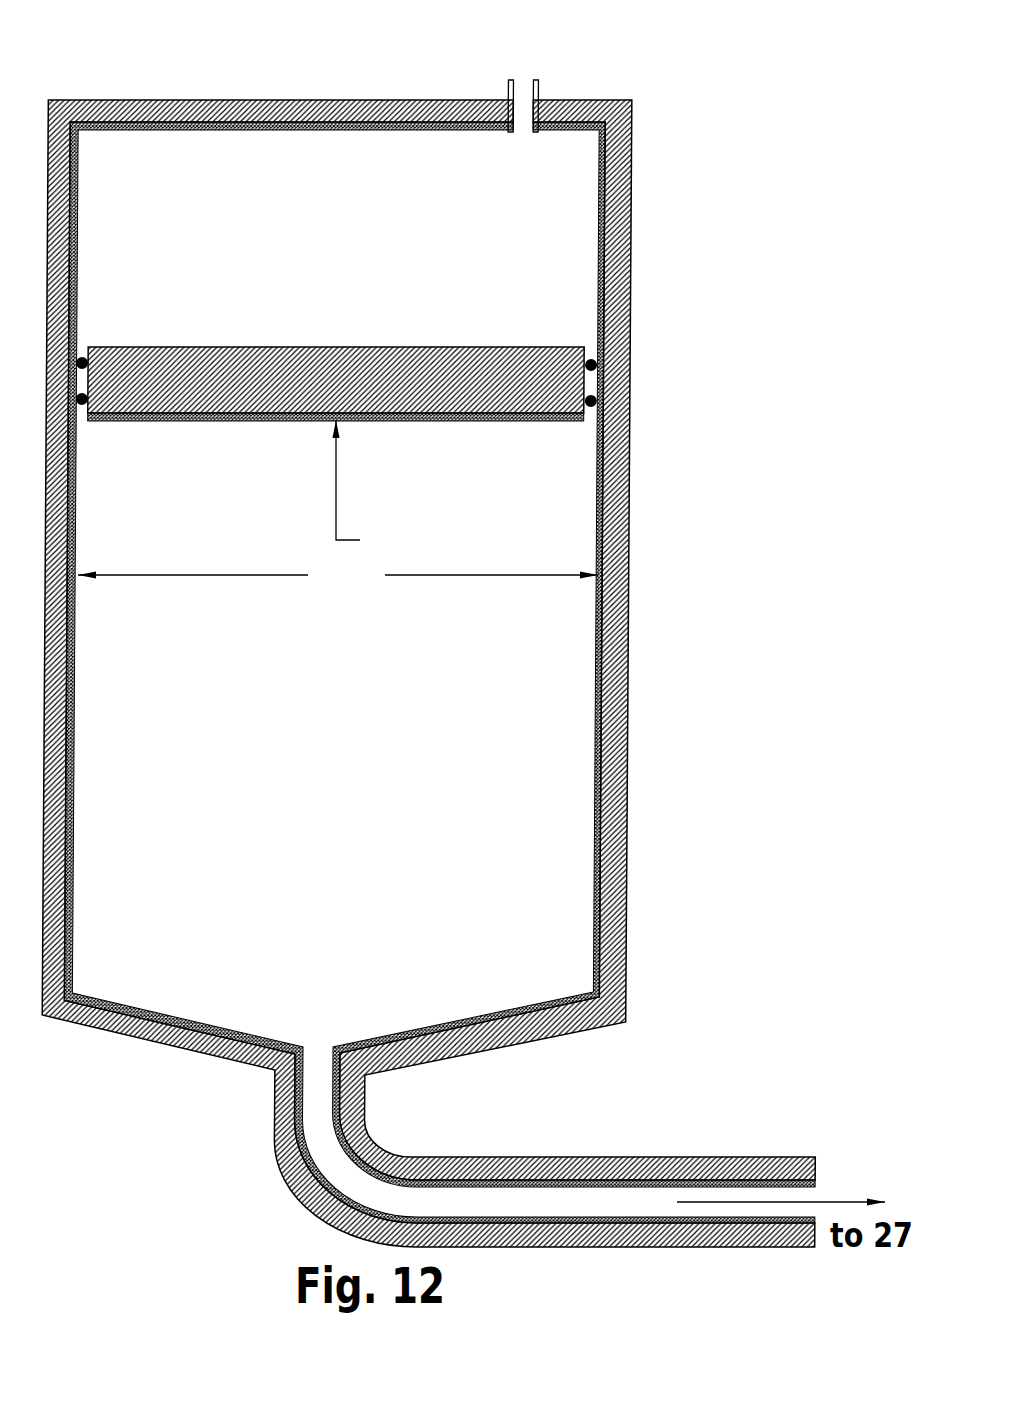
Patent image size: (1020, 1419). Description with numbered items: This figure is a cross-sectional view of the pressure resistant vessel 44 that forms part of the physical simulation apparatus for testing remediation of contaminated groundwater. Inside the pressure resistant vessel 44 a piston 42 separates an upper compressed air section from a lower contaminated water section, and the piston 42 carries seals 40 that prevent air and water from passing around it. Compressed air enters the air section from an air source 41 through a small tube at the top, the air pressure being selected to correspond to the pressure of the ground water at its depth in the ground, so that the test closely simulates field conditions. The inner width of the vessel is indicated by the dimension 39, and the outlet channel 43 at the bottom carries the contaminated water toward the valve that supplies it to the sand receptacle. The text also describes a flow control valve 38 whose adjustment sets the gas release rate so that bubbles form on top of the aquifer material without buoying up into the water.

The flow control valve 38 is at (642, 465).
The inner diameter of housing 39 is at (338, 578).
The seals 40 is at (584, 398).
The air source 41 is at (522, 105).
The piston 42 is at (445, 410).
The outlet channel 43 is at (810, 1193).
The pressure resistant vessel 44 is at (400, 205).